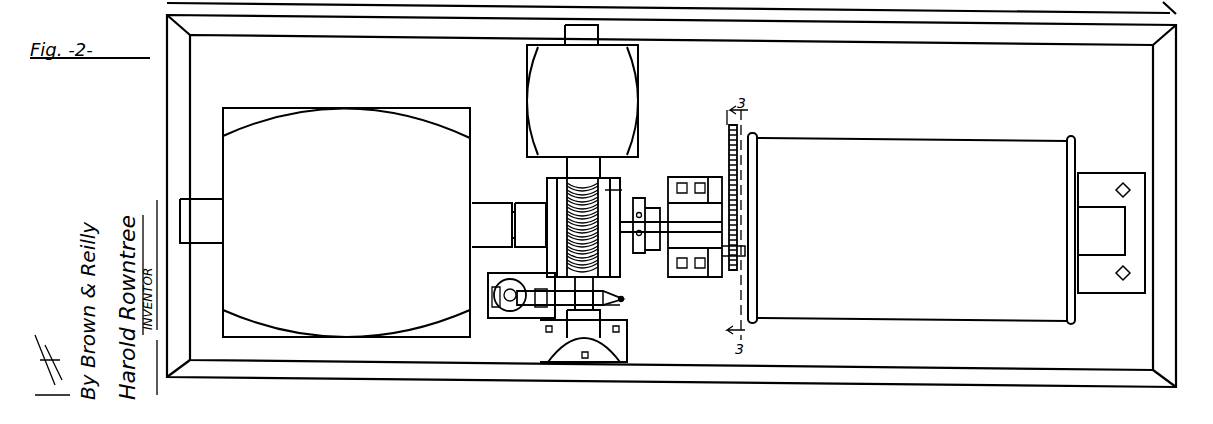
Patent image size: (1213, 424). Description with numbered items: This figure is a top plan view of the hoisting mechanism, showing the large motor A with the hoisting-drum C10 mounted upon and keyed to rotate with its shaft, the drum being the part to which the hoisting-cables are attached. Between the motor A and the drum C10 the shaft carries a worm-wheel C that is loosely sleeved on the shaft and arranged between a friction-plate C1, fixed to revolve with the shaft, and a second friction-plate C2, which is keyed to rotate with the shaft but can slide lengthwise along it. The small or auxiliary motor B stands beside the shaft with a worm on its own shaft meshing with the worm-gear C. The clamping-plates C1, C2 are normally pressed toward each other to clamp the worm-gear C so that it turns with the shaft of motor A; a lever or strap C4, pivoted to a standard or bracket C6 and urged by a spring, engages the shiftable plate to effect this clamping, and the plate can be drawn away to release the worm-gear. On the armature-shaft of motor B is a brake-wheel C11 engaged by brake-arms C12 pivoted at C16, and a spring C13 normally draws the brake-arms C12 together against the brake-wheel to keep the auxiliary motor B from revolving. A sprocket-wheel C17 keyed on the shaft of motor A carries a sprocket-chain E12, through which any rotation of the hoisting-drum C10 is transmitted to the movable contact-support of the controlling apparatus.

The large motor A is at (325, 222).
The small or auxiliary motor B is at (582, 101).
The worm-wheel C is at (612, 182).
The friction-plate C1 is at (547, 184).
The second friction-plate C2 is at (622, 190).
The lever or strap C4 is at (640, 253).
The standard or bracket C6 is at (687, 213).
The hoisting-drum C10 is at (897, 150).
The brake-wheel C11 is at (623, 298).
The brake-arms C12 is at (518, 290).
The pivot C16 is at (538, 290).
The spring C13 is at (621, 303).
The sprocket-wheel C17 is at (745, 251).
The sprocket-chain E12 is at (723, 179).